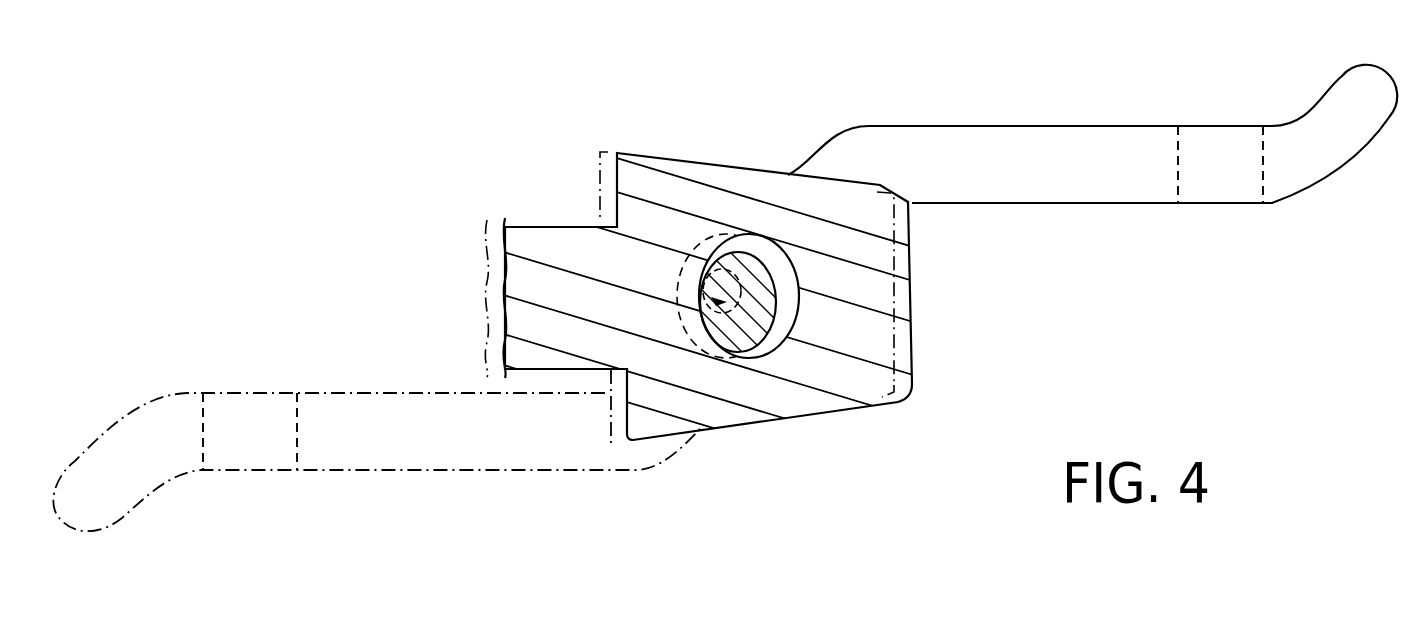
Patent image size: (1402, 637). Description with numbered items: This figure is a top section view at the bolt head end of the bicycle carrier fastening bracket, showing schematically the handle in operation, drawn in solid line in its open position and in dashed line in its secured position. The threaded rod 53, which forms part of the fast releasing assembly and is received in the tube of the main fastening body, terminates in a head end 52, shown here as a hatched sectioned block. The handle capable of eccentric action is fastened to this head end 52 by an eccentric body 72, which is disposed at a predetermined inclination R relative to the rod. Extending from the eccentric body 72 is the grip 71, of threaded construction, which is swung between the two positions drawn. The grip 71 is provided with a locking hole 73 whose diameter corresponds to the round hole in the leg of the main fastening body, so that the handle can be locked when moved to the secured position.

The head end 52 is at (903, 358).
The threaded rod 53 is at (533, 240).
The grip 71 is at (1040, 144).
The eccentric body 72 is at (757, 317).
The locking hole 73 is at (1262, 174).
The predetermined inclination R is at (808, 160).